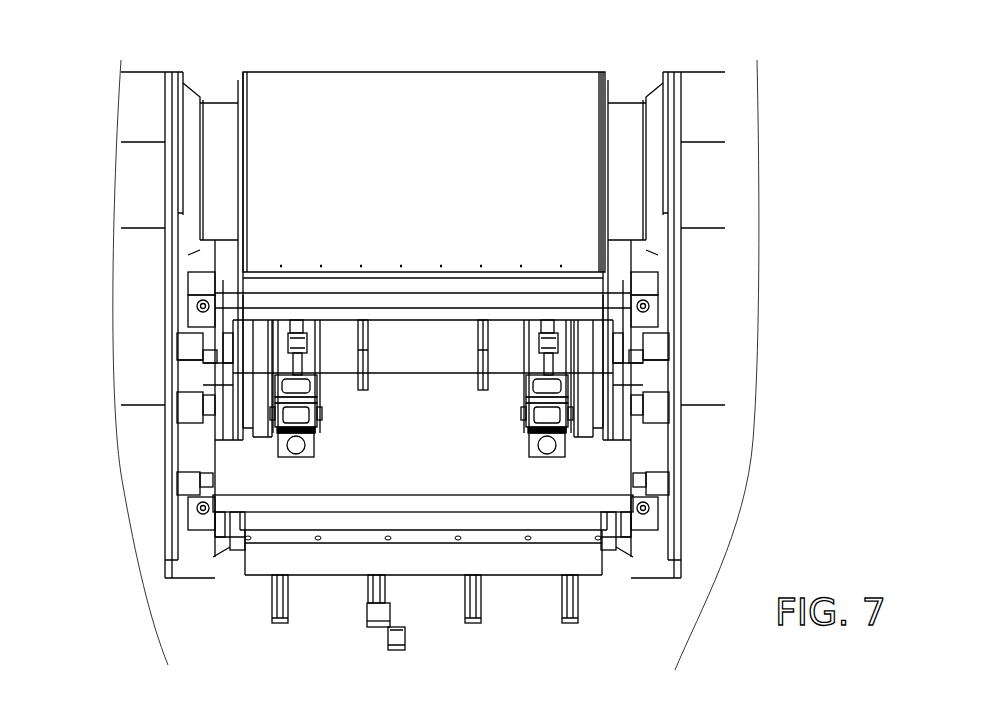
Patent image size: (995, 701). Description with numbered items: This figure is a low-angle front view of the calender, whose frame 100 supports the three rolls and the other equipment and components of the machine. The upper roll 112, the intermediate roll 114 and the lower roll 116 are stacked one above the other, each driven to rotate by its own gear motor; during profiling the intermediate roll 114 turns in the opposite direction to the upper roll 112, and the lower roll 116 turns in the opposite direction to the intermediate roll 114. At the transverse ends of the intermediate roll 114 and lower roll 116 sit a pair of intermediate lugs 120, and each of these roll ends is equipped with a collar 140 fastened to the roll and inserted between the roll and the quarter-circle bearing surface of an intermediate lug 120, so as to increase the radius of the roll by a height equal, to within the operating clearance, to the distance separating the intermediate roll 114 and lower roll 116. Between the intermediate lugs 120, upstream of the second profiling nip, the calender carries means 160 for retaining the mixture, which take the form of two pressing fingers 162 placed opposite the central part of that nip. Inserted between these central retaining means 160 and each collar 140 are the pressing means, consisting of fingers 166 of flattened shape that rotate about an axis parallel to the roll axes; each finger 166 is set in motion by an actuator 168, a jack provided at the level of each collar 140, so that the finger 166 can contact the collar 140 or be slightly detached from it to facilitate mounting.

The frame 100 is at (132, 100).
The upper roll 112 is at (500, 100).
The intermediate roll 114 is at (397, 359).
The lower roll 116 is at (532, 565).
The intermediate lug 120 is at (263, 436).
The collar 140 is at (245, 335).
The means for retaining the mixture 160 is at (367, 397).
The pressing finger 162 is at (363, 320).
The finger 166 is at (297, 322).
The actuator 168 is at (296, 458).